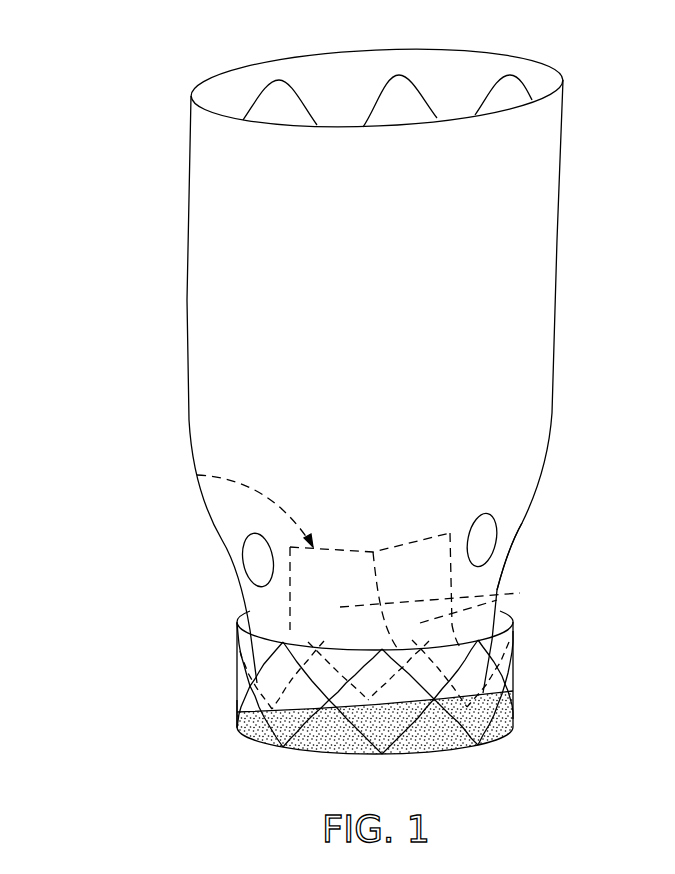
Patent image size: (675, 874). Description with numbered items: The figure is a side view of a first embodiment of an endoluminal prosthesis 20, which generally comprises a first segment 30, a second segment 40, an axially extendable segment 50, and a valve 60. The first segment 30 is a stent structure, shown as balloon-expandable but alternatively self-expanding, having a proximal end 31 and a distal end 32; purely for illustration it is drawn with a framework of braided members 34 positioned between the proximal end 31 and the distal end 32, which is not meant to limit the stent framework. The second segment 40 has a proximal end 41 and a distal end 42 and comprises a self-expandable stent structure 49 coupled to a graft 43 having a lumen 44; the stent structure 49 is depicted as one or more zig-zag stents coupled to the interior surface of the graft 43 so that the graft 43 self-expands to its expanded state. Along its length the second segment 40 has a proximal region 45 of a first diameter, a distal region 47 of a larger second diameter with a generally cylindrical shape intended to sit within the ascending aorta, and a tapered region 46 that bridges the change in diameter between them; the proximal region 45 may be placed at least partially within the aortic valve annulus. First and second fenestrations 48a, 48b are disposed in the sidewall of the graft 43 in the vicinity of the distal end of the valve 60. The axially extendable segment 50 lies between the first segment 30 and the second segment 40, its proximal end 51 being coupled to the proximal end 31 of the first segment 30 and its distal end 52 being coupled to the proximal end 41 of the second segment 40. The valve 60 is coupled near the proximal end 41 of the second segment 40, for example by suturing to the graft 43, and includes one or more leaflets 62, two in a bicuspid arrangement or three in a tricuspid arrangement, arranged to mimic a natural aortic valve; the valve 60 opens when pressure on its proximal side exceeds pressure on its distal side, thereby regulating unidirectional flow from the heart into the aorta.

The endoluminal prosthesis 20 is at (127, 108).
The first segment 30 is at (235, 687).
The proximal end of first segment 31 is at (238, 708).
The distal end of first segment 32 is at (233, 610).
The braided members 34 is at (247, 648).
The second segment 40 is at (235, 287).
The proximal end of second segment 41 is at (483, 675).
The distal end of second segment 42 is at (540, 130).
The graft 43 is at (328, 87).
The lumen 44 is at (463, 82).
The proximal region 45 is at (487, 645).
The tapered region 46 is at (502, 562).
The distal region 47 is at (557, 240).
The first fenestration 48a is at (255, 550).
The second fenestration 48b is at (483, 537).
The stent structure 49 is at (410, 78).
The axially extendable segment 50 is at (357, 743).
The proximal end of axially extendable segment 51 is at (440, 743).
The distal end of axially extendable segment 52 is at (498, 712).
The valve 60 is at (193, 474).
The leaflets 62 is at (502, 595).